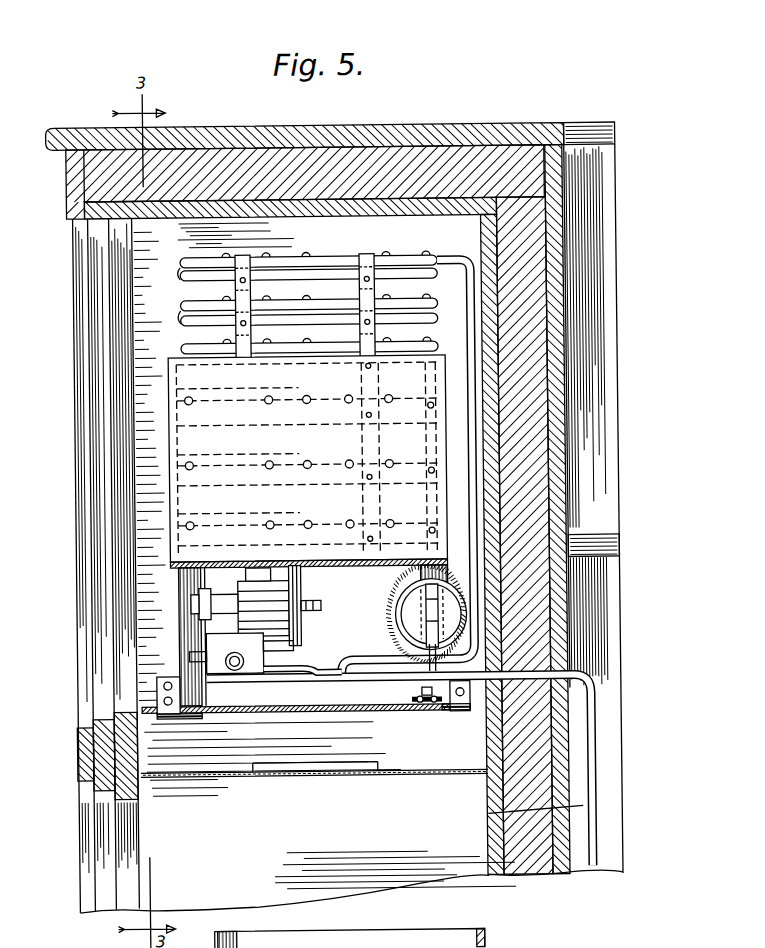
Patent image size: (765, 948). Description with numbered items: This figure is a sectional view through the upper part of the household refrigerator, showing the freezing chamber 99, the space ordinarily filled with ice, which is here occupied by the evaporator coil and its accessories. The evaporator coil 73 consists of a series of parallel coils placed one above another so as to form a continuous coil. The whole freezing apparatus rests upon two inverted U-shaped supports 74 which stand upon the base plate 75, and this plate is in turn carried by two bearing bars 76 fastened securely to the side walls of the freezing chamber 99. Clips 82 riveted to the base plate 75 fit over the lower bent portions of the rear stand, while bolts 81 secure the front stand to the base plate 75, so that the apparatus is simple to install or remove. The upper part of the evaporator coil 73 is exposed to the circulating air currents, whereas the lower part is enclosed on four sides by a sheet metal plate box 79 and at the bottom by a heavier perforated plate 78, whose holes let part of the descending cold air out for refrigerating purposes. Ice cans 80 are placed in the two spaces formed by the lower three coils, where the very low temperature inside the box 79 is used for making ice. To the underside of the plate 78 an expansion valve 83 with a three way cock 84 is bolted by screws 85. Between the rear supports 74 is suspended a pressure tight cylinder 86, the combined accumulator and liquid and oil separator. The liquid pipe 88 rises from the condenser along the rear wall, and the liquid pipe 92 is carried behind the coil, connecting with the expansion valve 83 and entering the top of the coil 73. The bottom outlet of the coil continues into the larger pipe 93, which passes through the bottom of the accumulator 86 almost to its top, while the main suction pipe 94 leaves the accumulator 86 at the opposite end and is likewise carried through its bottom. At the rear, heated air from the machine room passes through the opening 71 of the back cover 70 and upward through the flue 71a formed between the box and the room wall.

The back cover 70 is at (77, 750).
The opening 71 is at (178, 623).
The flue 71a is at (600, 390).
The evaporator coil 73 is at (250, 261).
The inverted U-shaped supports 74 is at (447, 573).
The base plate 75 is at (320, 709).
The bearing bars 76 is at (455, 717).
The perforated plate 78 is at (365, 567).
The sheet metal plate box 79 is at (185, 356).
The ice cans 80 is at (178, 513).
The bolts 81 is at (205, 690).
The clips 82 is at (414, 698).
The expansion valve 83 is at (300, 584).
The three way cock 84 is at (252, 678).
The screws 85 is at (258, 576).
The pressure tight cylinder 86 is at (405, 598).
The liquid pipe 88 is at (485, 815).
The liquid pipe 92 is at (472, 466).
The larger pipe 93 is at (345, 618).
The main suction pipe 94 is at (600, 742).
The freezing chamber 99 is at (163, 297).